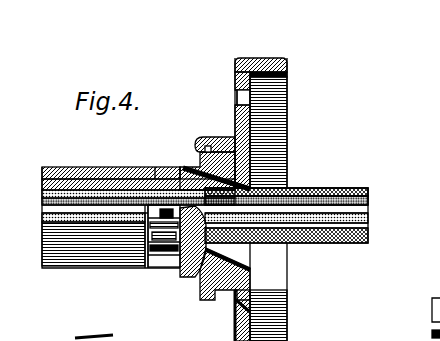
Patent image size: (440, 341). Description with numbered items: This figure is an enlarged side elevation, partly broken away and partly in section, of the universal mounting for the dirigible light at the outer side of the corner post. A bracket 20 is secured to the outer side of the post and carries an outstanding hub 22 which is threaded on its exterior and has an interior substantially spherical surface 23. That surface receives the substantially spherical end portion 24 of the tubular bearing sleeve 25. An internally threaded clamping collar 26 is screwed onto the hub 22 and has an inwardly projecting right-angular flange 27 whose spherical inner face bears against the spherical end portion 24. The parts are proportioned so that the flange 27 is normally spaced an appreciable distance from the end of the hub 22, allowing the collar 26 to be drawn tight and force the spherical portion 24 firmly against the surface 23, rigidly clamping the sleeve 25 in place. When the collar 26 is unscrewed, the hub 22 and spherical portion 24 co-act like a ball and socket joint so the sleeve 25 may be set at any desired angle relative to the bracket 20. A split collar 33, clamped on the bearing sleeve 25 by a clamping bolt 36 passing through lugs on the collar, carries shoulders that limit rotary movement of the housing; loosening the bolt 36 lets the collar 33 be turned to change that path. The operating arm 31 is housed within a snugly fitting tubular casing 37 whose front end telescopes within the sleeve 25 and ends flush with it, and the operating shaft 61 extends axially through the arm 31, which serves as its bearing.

The bracket 20 is at (264, 188).
The hub 22 is at (231, 147).
The spherical surface 23 is at (252, 163).
The spherical end portion 24 is at (253, 178).
The tubular bearing sleeve 25 is at (122, 184).
The clamping collar 26 is at (214, 137).
The flange 27 is at (205, 153).
The operating arm 31 is at (369, 197).
The split collar 33 is at (150, 212).
The clamping bolt 36 is at (114, 171).
The tubular casing 37 is at (366, 190).
The operating shaft 61 is at (370, 202).